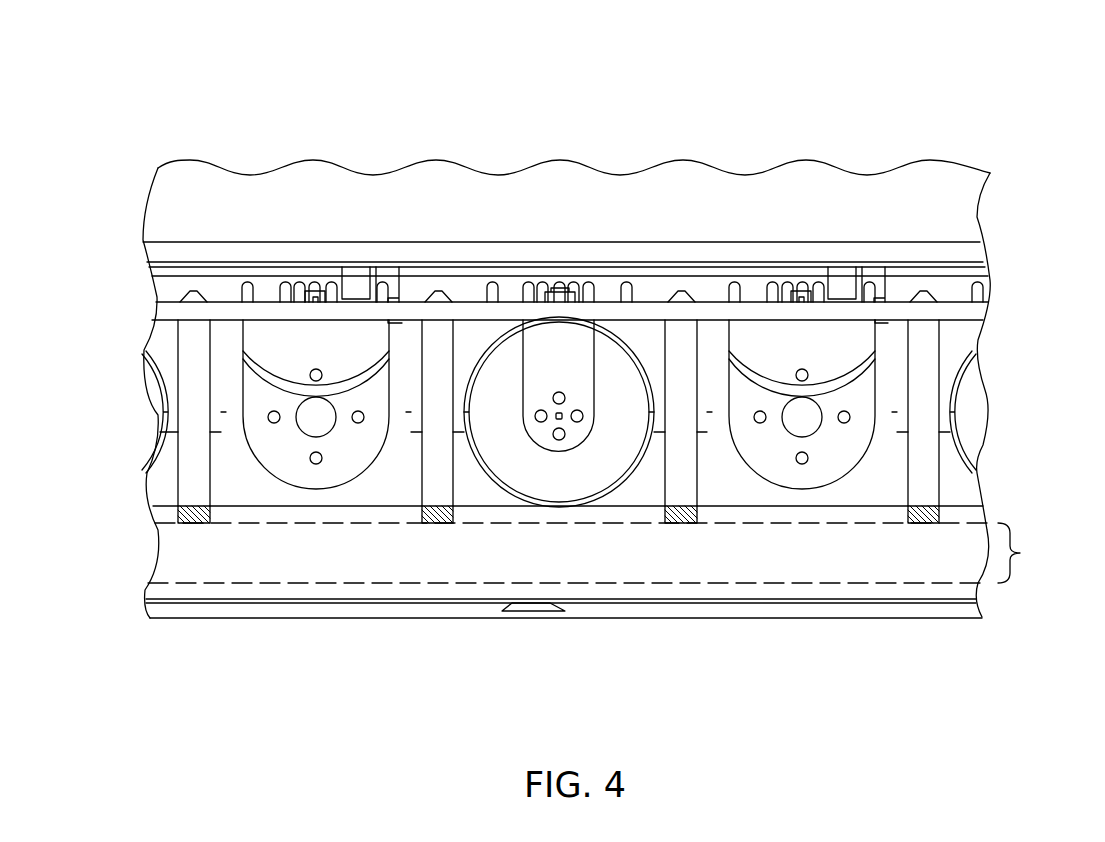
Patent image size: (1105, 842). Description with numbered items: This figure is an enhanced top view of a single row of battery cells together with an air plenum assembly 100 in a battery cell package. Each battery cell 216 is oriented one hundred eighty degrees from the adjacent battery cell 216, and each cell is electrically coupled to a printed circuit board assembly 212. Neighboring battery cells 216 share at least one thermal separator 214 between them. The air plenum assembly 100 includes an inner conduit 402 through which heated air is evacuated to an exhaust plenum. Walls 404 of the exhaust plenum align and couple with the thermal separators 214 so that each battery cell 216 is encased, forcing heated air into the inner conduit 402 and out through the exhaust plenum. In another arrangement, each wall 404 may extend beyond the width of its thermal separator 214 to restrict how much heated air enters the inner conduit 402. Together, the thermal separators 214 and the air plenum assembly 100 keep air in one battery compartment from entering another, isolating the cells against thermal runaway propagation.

The air plenum assembly 100 is at (300, 560).
The printed circuit board assembly 212 is at (950, 286).
The thermal separators 214 is at (920, 350).
The battery cell 216 is at (393, 488).
The inner conduit 402 is at (610, 553).
The walls 404 is at (695, 523).